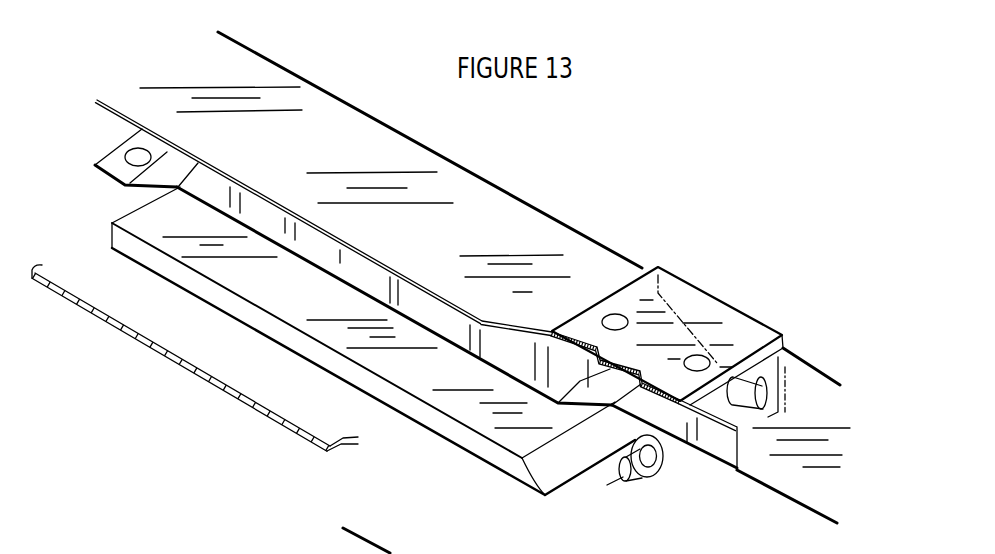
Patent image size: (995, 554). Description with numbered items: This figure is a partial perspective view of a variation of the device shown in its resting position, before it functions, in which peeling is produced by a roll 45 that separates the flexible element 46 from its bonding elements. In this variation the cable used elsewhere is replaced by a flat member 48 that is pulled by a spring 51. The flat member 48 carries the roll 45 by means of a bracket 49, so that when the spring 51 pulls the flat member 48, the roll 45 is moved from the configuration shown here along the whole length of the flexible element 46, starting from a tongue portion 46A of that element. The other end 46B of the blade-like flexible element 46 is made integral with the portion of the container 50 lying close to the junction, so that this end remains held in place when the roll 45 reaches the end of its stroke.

The roll 45 is at (660, 477).
The flexible element 46 is at (367, 279).
The tongue portion 46A is at (712, 445).
The other end of the blade 46B is at (117, 163).
The flat member 48 is at (490, 202).
The bracket 49 is at (687, 297).
The container 50 is at (92, 238).
The spring 51 is at (276, 546).